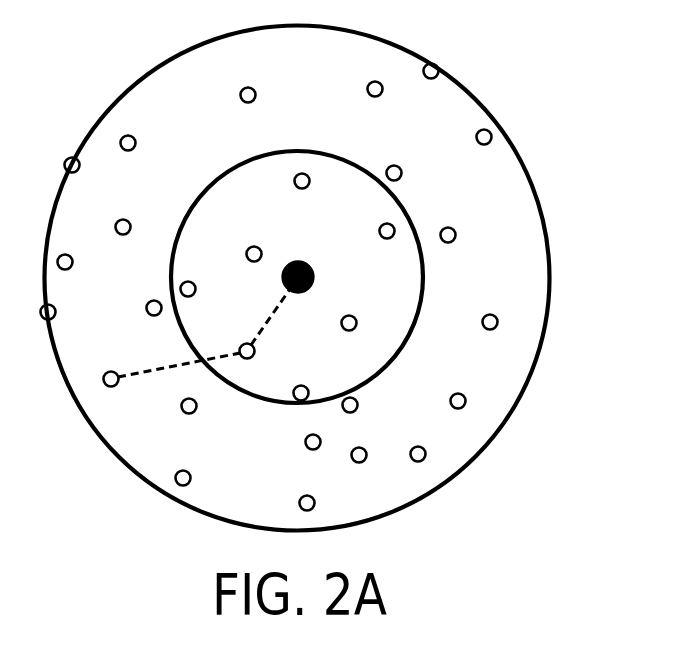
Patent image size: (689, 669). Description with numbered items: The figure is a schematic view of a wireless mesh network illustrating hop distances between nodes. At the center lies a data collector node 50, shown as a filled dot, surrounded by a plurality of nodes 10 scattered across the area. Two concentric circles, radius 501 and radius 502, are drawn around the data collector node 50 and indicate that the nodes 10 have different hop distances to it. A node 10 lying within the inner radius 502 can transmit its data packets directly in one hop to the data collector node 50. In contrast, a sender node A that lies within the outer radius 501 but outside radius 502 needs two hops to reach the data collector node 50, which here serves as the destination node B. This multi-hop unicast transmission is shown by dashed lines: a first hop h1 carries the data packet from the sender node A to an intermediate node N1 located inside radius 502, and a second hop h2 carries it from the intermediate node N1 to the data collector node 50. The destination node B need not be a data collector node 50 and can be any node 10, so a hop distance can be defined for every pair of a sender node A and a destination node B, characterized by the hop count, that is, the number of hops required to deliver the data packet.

The radius 501 is at (135, 82).
The radius 502 is at (297, 148).
The node 10 is at (498, 322).
The data collector node 50 is at (315, 280).
The destination node B is at (295, 263).
The sender node A is at (102, 378).
The intermediate node N1 is at (255, 352).
The hop h1 is at (147, 367).
The hop h2 is at (262, 333).